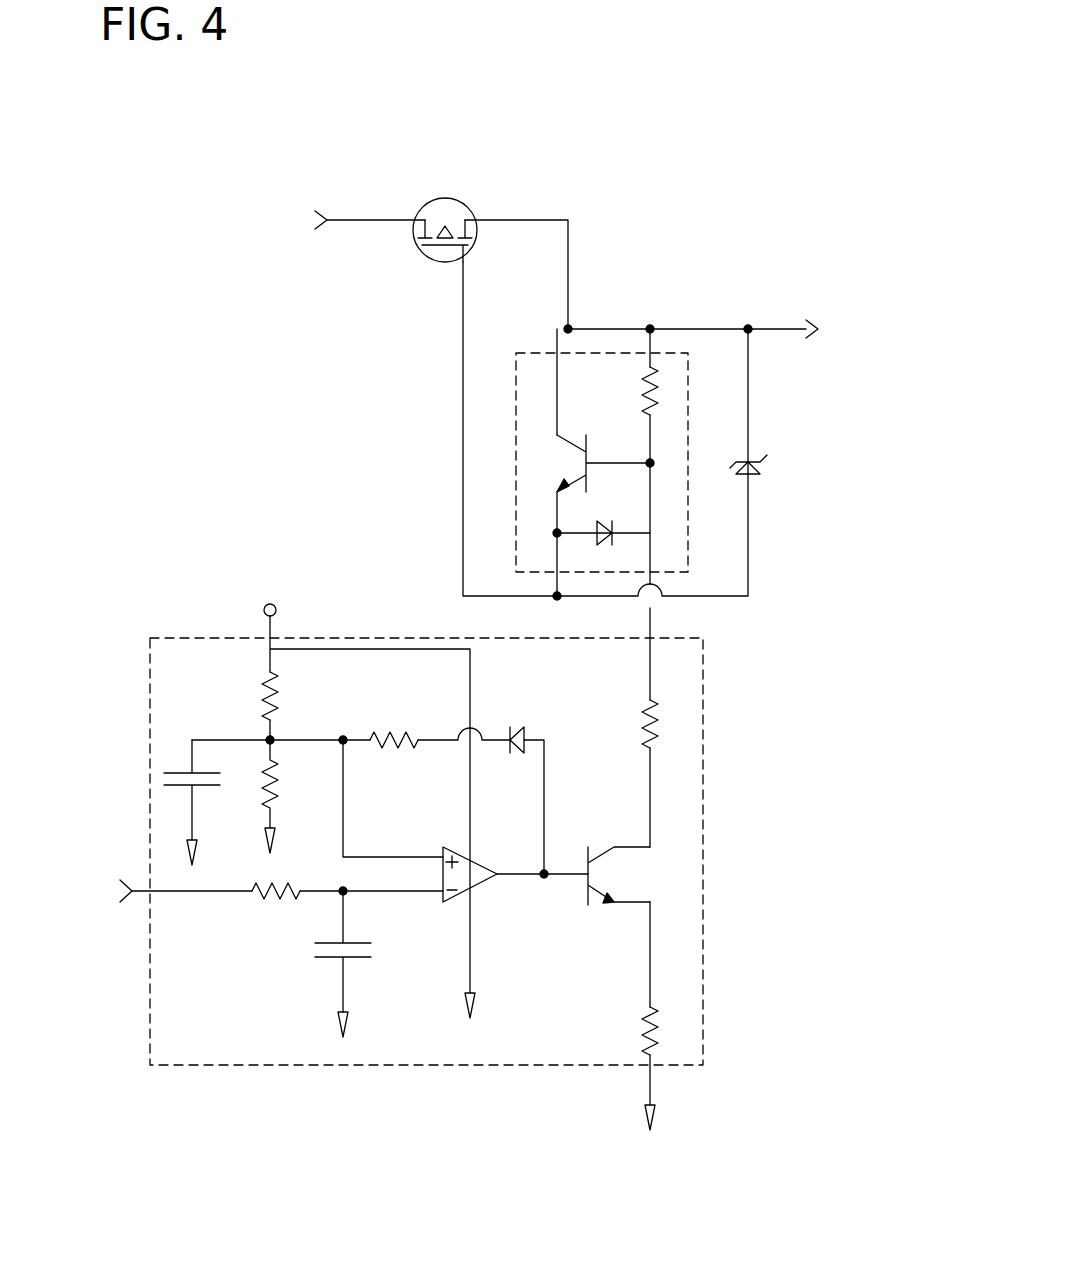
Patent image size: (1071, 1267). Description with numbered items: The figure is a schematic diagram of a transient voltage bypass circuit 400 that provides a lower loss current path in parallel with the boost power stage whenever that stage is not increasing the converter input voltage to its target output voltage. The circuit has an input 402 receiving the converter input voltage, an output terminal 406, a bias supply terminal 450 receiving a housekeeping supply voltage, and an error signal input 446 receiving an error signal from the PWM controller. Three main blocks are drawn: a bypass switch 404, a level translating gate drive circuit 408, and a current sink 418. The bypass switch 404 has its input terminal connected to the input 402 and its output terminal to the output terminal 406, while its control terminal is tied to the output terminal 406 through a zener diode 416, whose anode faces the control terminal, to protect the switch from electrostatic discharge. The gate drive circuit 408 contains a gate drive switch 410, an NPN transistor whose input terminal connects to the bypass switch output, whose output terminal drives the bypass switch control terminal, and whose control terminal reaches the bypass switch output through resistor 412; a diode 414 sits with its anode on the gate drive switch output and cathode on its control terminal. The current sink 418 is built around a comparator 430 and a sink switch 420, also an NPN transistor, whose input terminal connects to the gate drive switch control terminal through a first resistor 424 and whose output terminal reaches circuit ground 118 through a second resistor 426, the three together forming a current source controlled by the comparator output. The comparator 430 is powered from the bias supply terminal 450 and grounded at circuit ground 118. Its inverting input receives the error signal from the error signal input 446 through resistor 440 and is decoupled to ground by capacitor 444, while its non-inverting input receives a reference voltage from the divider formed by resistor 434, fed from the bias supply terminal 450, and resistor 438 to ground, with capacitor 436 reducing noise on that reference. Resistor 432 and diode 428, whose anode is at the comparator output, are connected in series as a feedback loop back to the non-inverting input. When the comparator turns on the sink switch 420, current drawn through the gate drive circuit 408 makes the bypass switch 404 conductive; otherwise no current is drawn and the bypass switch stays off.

The transient voltage bypass circuit 400 is at (698, 151).
The input 402 is at (322, 236).
The bypass switch 404 is at (426, 256).
The output terminal 406 is at (812, 340).
The level translating gate drive circuit 408 is at (543, 352).
The gate drive switch 410 is at (566, 445).
The resistor 412 is at (658, 388).
The diode 414 is at (603, 521).
The zener diode 416 is at (764, 468).
The current sink 418 is at (704, 785).
The sink switch 420 is at (605, 845).
The first resistor 424 is at (665, 718).
The second resistor 426 is at (647, 1028).
The diode 428 is at (516, 727).
The comparator 430 is at (450, 845).
The resistor 432 is at (392, 738).
The resistor 434 is at (277, 695).
The capacitor 436 is at (179, 748).
The resistor 438 is at (303, 792).
The resistor 440 is at (283, 906).
The capacitor 444 is at (345, 920).
The error signal input 446 is at (128, 906).
The bias supply terminal 450 is at (272, 598).
The circuit ground 118 is at (340, 1024).